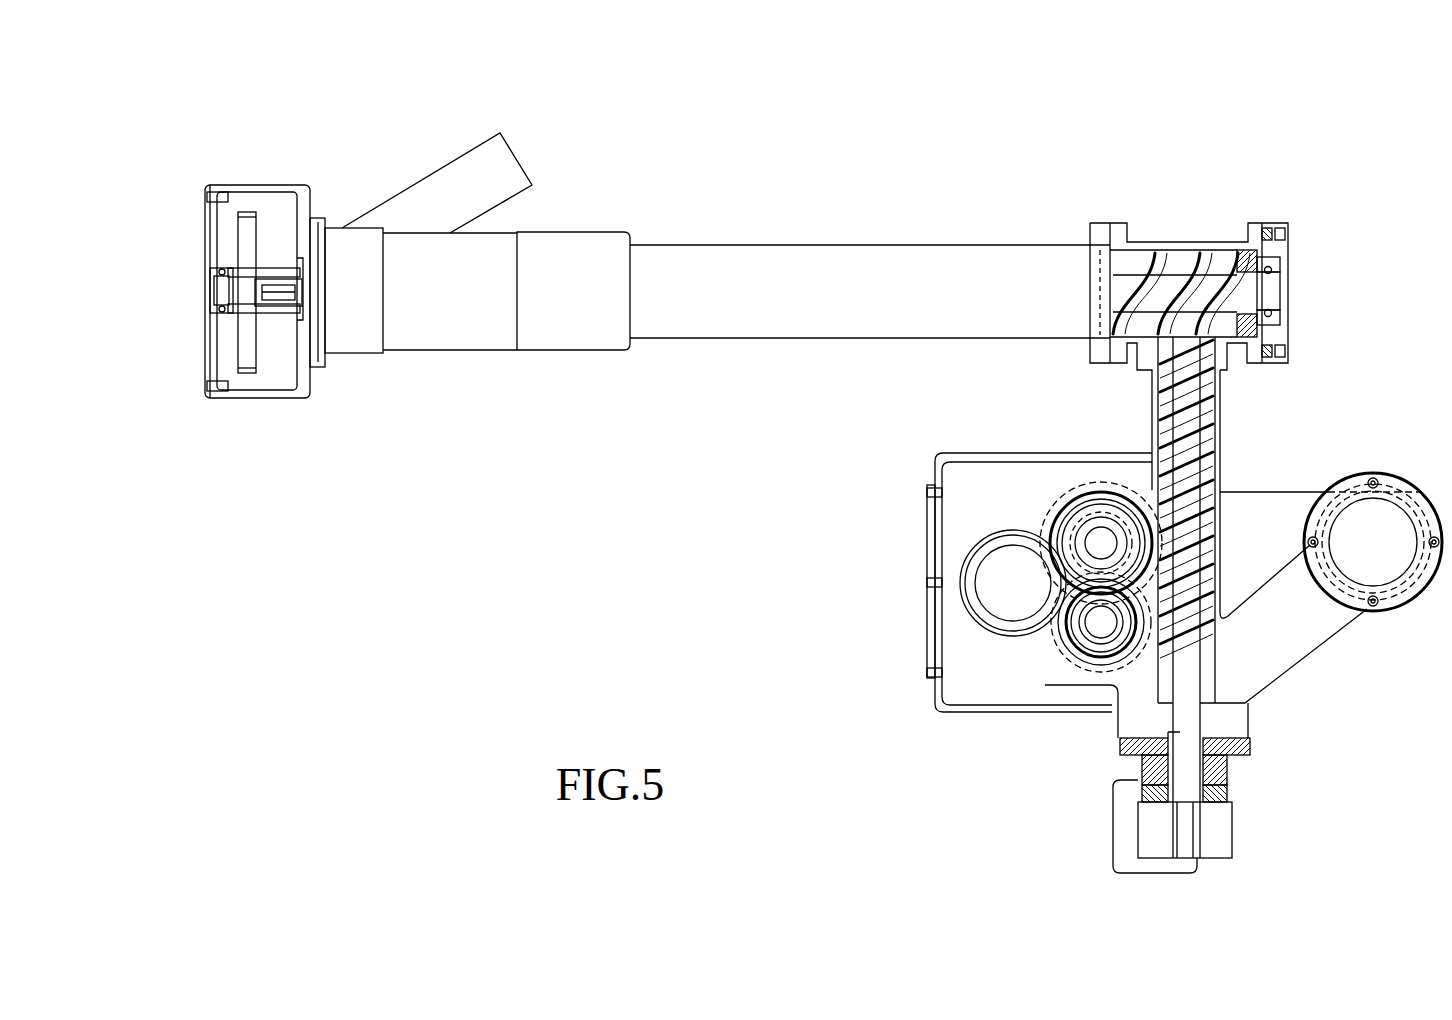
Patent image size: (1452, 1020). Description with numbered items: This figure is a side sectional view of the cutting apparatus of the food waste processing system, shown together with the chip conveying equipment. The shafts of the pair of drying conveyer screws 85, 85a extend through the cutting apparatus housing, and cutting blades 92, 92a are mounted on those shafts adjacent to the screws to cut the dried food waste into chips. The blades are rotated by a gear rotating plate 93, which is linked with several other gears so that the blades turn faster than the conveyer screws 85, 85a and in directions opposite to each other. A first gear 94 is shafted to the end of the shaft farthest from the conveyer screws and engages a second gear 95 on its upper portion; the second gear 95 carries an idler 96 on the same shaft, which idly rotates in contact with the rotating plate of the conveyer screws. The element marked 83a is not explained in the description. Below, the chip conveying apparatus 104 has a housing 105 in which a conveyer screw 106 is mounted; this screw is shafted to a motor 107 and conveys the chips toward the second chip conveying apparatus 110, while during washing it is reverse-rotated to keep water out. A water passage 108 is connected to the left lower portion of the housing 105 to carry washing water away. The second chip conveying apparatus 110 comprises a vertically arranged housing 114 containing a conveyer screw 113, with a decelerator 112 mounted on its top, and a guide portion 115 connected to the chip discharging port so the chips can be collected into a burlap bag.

The second chip conveying apparatus 110 is at (607, 227).
The decelerator 112 is at (205, 382).
The conveyer screw 113 is at (1157, 245).
The housing 114 is at (555, 345).
The guide portion 115 is at (420, 178).
The drying conveyer screw 85 is at (1060, 540).
The drying conveyer screw 85a is at (1093, 627).
The gear 83a is at (1082, 662).
The cutting blade 92 is at (1135, 518).
The cutting blade 92a is at (1110, 680).
The gear rotating plate 93 is at (1092, 542).
The first gear 94 is at (1100, 518).
The second gear 95 is at (996, 547).
The idler 96 is at (960, 587).
The chip conveying apparatus 104 is at (1227, 562).
The housing 105 is at (1217, 540).
The conveyer screw 106 is at (1213, 428).
The motor 107 is at (1218, 823).
The water passage 108 is at (1318, 653).